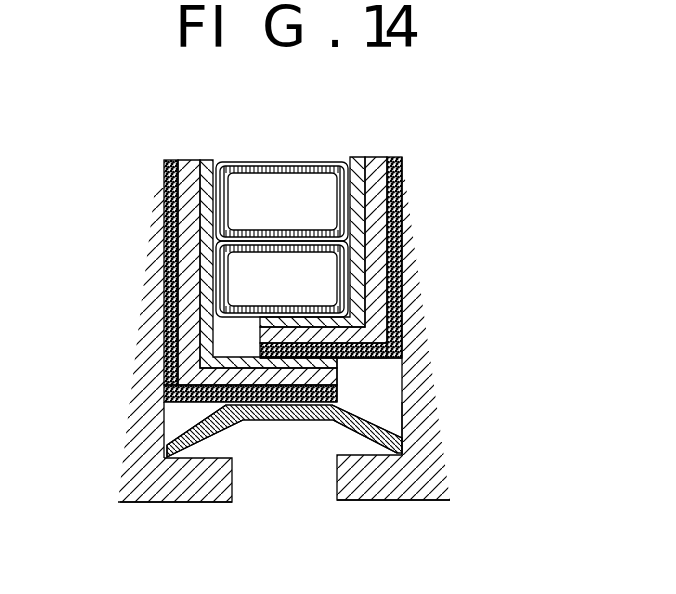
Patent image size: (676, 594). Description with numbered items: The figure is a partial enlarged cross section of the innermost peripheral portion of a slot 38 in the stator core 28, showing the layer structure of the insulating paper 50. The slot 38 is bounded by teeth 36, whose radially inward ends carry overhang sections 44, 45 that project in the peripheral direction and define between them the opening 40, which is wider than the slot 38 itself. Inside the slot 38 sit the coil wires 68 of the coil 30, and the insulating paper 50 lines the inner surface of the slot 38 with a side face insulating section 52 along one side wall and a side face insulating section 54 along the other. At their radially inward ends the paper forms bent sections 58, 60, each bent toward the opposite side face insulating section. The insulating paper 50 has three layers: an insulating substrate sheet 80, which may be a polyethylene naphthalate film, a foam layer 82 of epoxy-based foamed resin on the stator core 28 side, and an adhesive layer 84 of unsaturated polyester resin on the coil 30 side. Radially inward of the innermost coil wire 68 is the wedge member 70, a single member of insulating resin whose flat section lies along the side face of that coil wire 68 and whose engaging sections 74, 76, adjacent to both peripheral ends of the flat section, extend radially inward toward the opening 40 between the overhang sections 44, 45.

The stator core 28 is at (436, 328).
The coil 30 is at (282, 204).
The teeth 36 is at (140, 504).
The slot 38 is at (390, 413).
The opening 40 is at (300, 511).
The overhang section 44 is at (201, 503).
The overhang section 45 is at (358, 490).
The insulating paper 50 is at (196, 245).
The side face insulating section 52 is at (160, 268).
The side face insulating section 54 is at (404, 227).
The bent section 58 is at (166, 404).
The bent section 60 is at (368, 367).
The coil wire 68 is at (299, 214).
The wedge member 70 is at (284, 485).
The engaging section 74 is at (229, 440).
The engaging section 76 is at (343, 430).
The insulating substrate sheet 80 is at (189, 160).
The foam layer 82 is at (168, 160).
The adhesive layer 84 is at (205, 160).